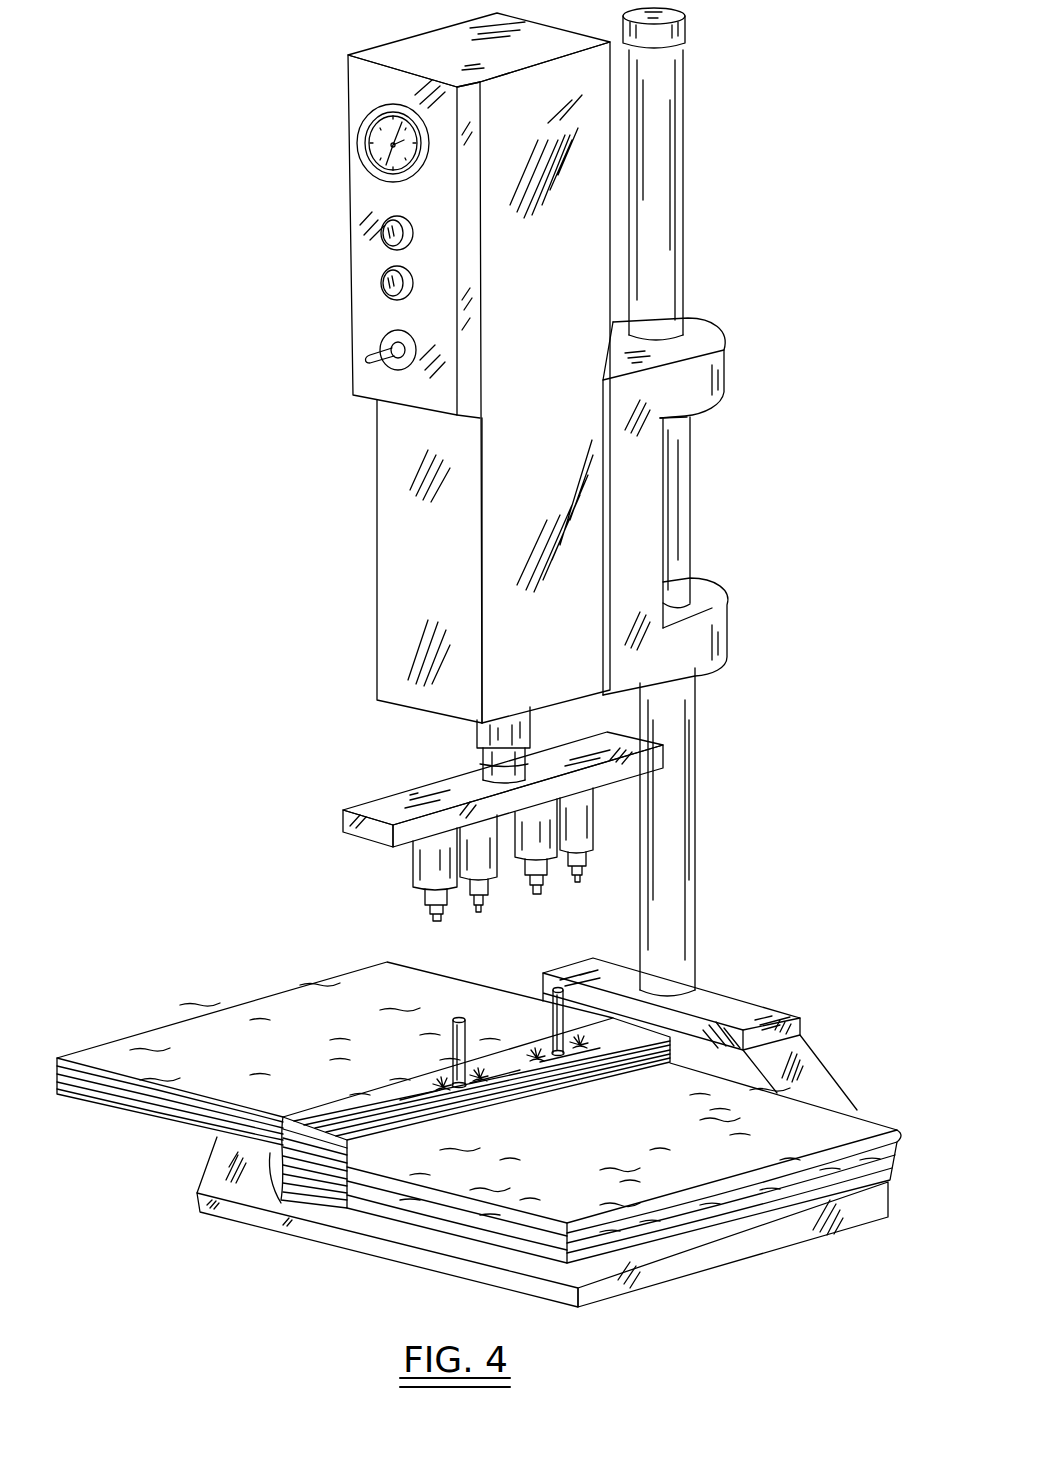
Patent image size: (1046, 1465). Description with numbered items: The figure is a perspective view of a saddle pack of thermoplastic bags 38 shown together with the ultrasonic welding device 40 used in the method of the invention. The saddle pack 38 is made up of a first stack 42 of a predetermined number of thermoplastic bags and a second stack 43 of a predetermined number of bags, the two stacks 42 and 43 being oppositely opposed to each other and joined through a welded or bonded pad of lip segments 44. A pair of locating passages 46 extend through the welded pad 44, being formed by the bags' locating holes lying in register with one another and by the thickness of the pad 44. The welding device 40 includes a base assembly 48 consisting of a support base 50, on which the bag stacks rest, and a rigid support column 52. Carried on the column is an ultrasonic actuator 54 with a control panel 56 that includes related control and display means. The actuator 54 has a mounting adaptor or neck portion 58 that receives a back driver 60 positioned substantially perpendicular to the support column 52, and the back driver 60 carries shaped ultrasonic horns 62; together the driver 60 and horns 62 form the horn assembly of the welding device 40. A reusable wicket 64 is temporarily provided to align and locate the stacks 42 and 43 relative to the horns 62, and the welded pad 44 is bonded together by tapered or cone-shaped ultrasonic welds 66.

The saddle pack of thermoplastic bags 38 is at (254, 955).
The ultrasonic welding device 40 is at (360, 526).
The first stack 42 is at (450, 1223).
The second stack 43 is at (97, 1108).
The welded pad of lip segments 44 is at (240, 1157).
The locating passages 46 is at (447, 1073).
The base assembly 48 is at (728, 952).
The support base 50 is at (663, 1270).
The support column 52 is at (693, 684).
The ultrasonic actuator 54 is at (562, 307).
The control panel 56 is at (358, 90).
The mounting adaptor or neck portion 58 is at (477, 733).
The back driver 60 is at (378, 802).
The shaped ultrasonic horns 62 is at (411, 854).
The reusable wicket 64 is at (455, 1020).
The tapered or cone-shaped ultrasonic welds 66 is at (446, 1092).